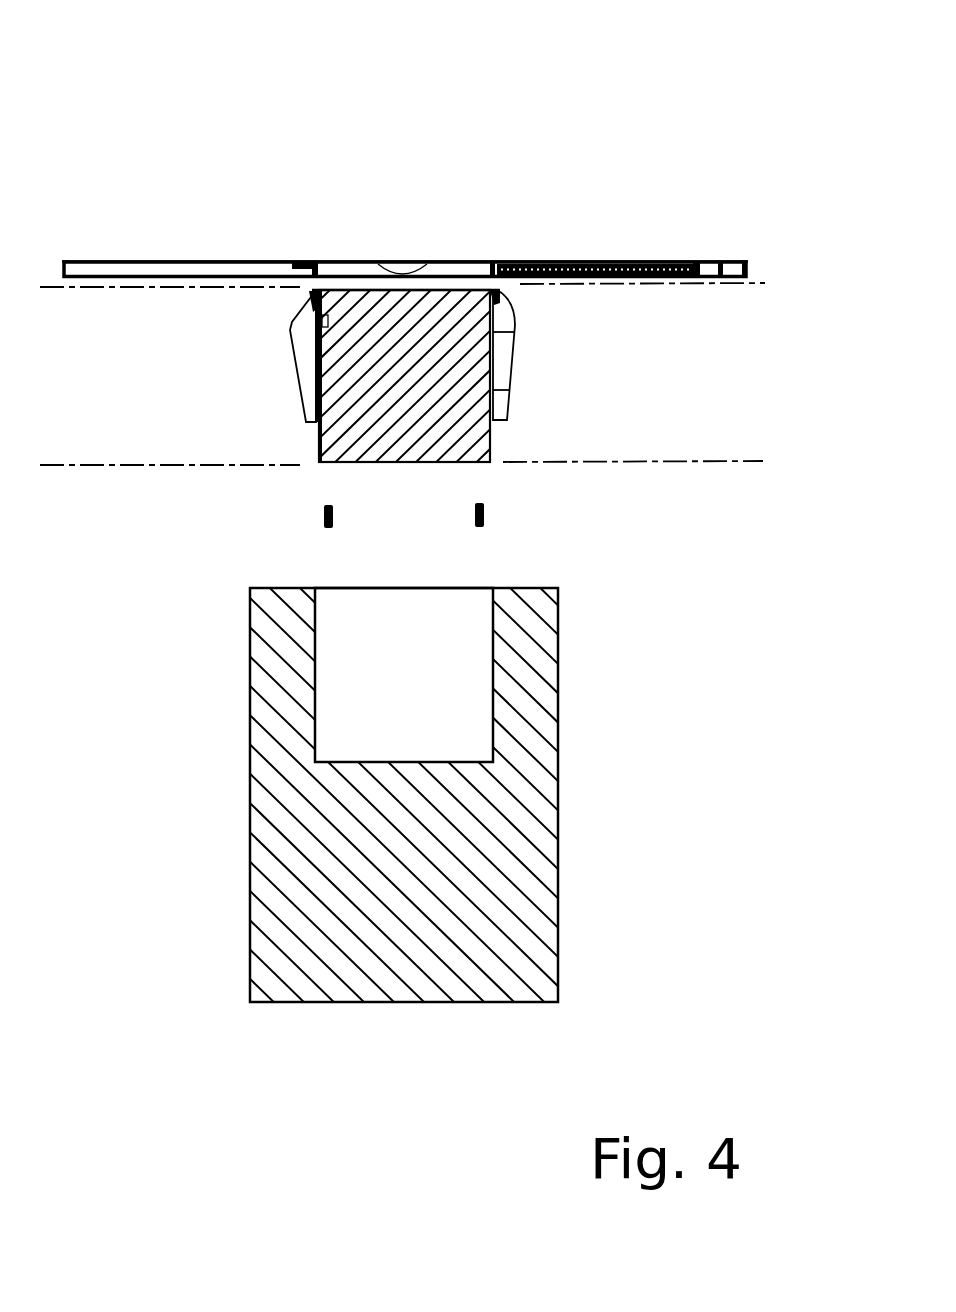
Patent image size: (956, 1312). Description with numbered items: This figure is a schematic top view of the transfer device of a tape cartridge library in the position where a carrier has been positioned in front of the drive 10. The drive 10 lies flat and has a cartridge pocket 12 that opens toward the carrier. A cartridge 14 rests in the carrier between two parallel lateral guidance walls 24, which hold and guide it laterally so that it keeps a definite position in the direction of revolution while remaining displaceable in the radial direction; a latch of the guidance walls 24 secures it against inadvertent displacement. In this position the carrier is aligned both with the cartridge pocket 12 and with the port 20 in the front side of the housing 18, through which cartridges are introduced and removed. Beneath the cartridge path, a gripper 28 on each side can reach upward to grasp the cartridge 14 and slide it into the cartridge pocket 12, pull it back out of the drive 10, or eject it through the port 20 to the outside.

The drive 10 is at (478, 795).
The cartridge pocket 12 is at (294, 678).
The cartridge 14 is at (477, 375).
The housing 18 is at (188, 269).
The port 20 is at (477, 146).
The lateral guidance walls 24 is at (486, 356).
The gripper 28 is at (403, 532).